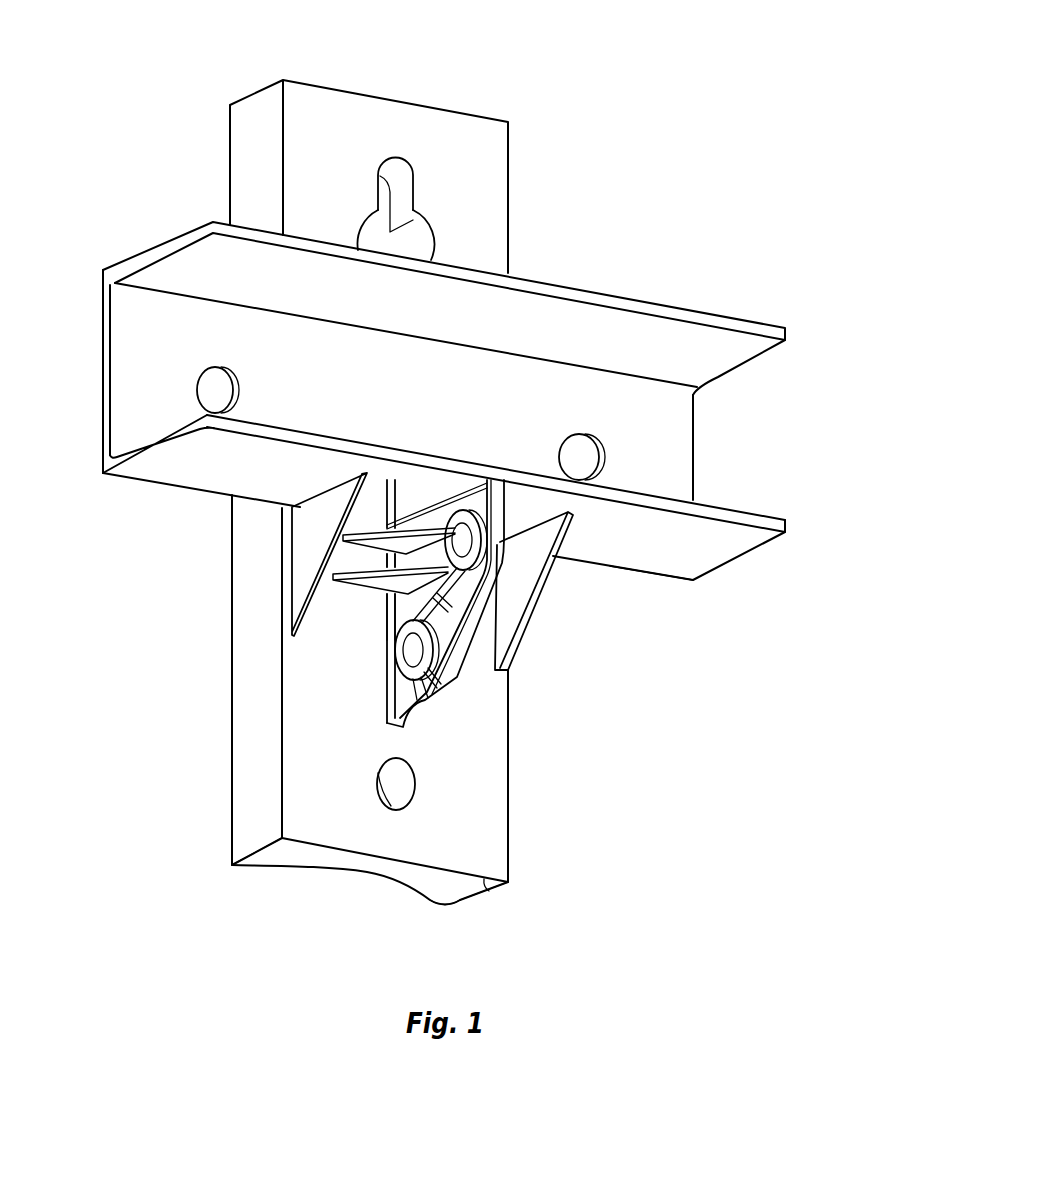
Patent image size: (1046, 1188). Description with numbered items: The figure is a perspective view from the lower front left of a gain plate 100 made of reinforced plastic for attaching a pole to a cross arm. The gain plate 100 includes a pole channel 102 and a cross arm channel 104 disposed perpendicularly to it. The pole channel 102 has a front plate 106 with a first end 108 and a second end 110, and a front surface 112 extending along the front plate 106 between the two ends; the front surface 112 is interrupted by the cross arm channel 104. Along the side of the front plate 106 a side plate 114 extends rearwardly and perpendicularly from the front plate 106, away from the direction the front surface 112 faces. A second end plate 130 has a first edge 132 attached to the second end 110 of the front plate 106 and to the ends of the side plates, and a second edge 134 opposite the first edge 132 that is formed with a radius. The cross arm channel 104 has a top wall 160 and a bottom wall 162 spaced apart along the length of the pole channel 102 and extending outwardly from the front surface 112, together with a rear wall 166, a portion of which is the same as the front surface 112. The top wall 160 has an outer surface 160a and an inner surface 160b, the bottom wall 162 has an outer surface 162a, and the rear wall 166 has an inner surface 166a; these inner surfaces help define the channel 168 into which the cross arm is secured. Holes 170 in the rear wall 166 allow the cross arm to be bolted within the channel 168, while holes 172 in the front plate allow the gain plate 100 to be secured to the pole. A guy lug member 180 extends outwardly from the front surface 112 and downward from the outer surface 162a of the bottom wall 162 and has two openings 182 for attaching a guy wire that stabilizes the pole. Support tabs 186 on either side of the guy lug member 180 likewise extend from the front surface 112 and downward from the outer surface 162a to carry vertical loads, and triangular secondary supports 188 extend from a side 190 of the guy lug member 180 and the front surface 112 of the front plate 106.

The gain plate 100 is at (707, 122).
The pole channel 102 is at (392, 729).
The cross arm channel 104 is at (443, 605).
The front plate 106 is at (395, 695).
The first end 108 is at (465, 114).
The second end 110 is at (307, 852).
The front surface 112 is at (460, 736).
The side plate 114 is at (257, 800).
The second end plate 130 is at (466, 893).
The first edge 132 is at (487, 888).
The second edge 134 is at (413, 888).
The top wall 160 is at (460, 406).
The outer surface 160a is at (738, 314).
The inner surface 160b is at (710, 357).
The bottom wall 162 is at (788, 521).
The outer surface 162a is at (725, 553).
The rear wall 166 is at (693, 432).
The inner surface 166a is at (675, 464).
The channel 168 is at (146, 358).
The holes 170 is at (238, 380).
The holes 172 is at (415, 186).
The guy lug member 180 is at (385, 727).
The openings 182 is at (398, 638).
The support tabs 186 is at (302, 538).
The secondary supports 188 is at (332, 579).
The side 190 is at (408, 603).